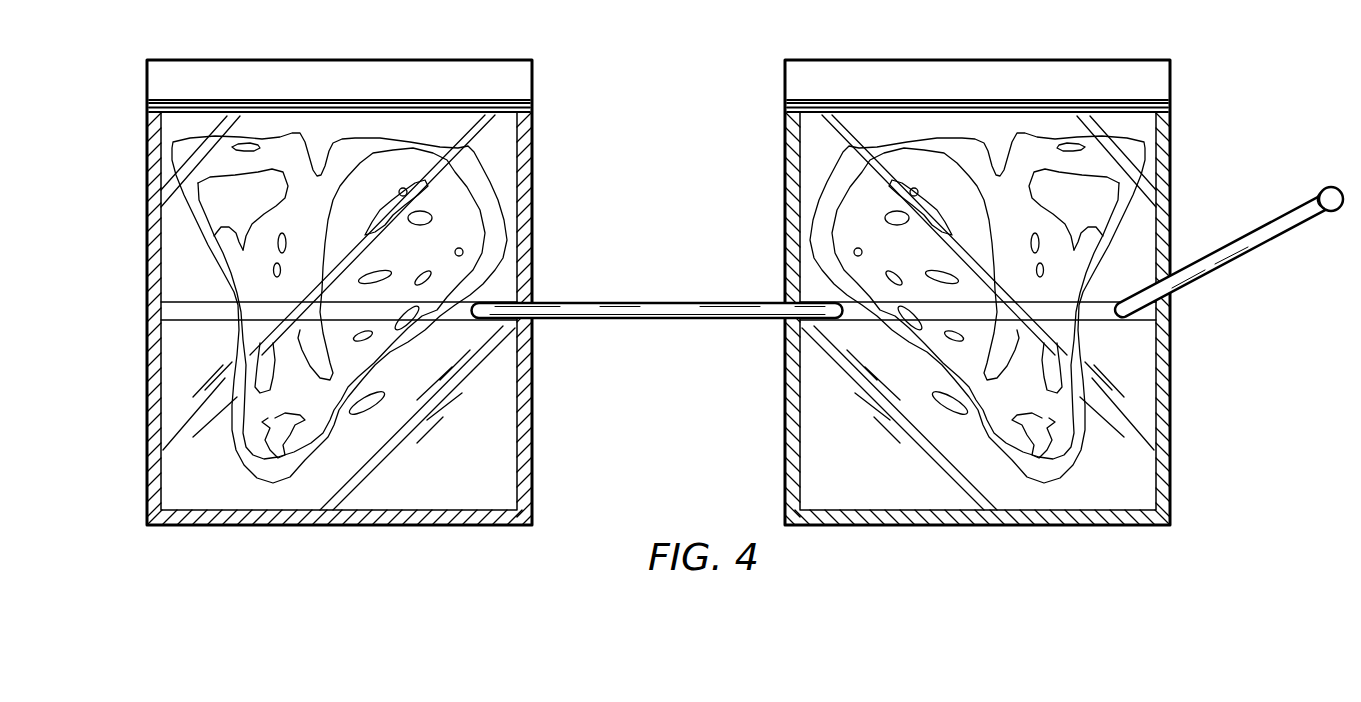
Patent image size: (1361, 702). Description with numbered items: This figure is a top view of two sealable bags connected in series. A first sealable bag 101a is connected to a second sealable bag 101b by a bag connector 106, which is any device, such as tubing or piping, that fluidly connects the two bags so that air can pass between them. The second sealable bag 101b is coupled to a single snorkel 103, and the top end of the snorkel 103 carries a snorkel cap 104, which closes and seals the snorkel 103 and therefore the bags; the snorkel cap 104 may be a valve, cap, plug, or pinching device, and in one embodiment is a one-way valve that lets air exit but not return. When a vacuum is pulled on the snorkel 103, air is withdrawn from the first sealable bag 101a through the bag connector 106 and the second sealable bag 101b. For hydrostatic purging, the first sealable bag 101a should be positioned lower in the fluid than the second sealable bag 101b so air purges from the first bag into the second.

The first sealable bag 101a is at (148, 388).
The second sealable bag 101b is at (1169, 388).
The snorkel 103 is at (1280, 237).
The snorkel cap 104 is at (1322, 187).
The bag connector 106 is at (703, 318).